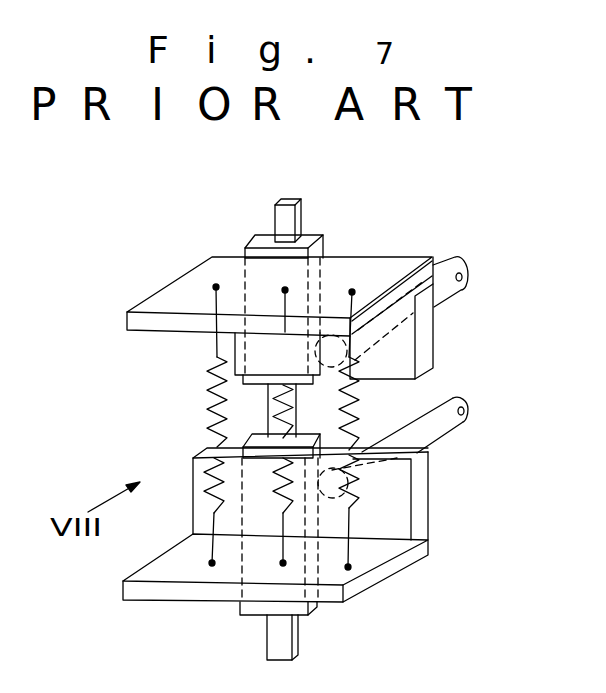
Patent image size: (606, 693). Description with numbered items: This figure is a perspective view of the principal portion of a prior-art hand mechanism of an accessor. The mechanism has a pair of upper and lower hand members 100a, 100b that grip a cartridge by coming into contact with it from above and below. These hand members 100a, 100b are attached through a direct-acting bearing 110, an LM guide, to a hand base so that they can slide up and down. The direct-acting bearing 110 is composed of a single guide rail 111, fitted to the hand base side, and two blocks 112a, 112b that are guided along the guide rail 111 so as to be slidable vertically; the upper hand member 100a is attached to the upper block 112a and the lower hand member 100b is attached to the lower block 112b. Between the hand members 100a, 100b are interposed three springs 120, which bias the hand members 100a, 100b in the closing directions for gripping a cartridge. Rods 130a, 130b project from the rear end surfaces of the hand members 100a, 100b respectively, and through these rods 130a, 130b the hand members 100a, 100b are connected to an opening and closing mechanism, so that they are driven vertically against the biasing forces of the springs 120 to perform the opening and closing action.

The upper hand member 100a is at (180, 293).
The lower hand member 100b is at (417, 542).
The direct-acting bearing 110 is at (281, 199).
The guide rail 111 is at (273, 204).
The upper block 112a is at (317, 238).
The lower block 112b is at (308, 608).
The springs 120 is at (207, 396).
The upper rod 130a is at (453, 290).
The lower rod 130b is at (438, 426).